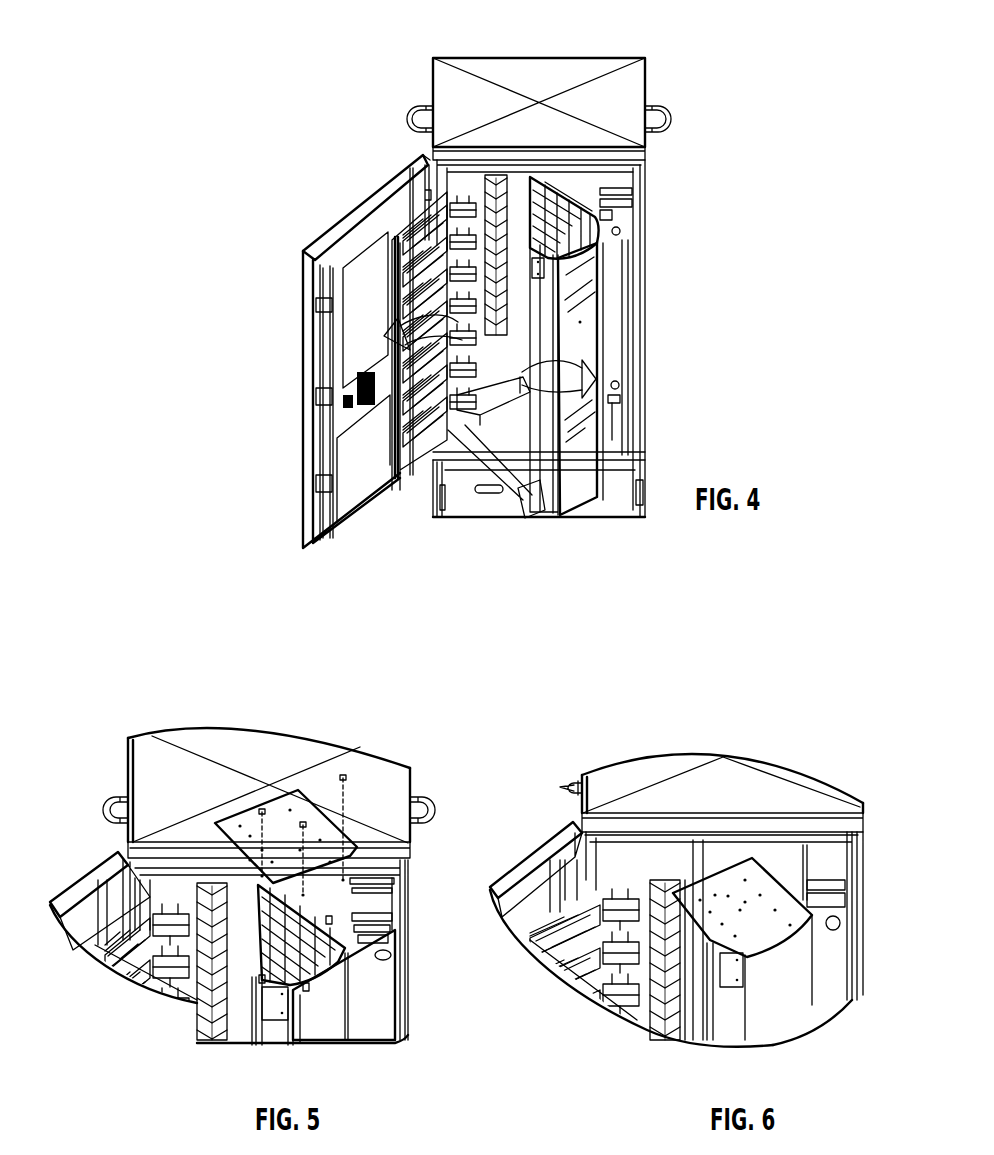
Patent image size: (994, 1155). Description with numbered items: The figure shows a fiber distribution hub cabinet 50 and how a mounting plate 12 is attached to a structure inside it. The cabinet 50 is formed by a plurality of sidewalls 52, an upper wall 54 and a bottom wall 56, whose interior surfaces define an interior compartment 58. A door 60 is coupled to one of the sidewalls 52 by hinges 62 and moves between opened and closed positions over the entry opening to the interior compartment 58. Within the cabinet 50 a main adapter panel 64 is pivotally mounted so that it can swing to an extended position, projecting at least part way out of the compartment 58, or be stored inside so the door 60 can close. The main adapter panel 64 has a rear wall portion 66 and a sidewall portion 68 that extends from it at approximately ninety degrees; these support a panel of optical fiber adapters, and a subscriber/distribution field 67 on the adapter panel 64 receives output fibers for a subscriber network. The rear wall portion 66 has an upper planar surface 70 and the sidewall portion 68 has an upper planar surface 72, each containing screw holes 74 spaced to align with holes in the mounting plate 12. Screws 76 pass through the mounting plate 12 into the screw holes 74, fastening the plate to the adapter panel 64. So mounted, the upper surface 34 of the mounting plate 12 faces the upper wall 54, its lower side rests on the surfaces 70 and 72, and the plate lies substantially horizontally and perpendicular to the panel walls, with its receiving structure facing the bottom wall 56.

In FIG. 5, the mounting plate 12 is at (340, 838).
In FIG. 6, the mounting plate 12 is at (765, 885).
In FIG. 6, the upper surface 34 is at (736, 878).
In FIG. 4, the fiber distribution hub cabinet 50 is at (600, 80).
In FIG. 5, the fiber distribution hub cabinet 50 is at (287, 778).
In FIG. 6, the fiber distribution hub cabinet 50 is at (717, 755).
In FIG. 4, the sidewalls 52 is at (645, 277).
In FIG. 4, the upper wall 54 is at (637, 81).
In FIG. 5, the upper wall 54 is at (205, 740).
In FIG. 6, the upper wall 54 is at (788, 775).
In FIG. 4, the bottom wall 56 is at (618, 523).
In FIG. 4, the interior compartment 58 is at (443, 412).
In FIG. 4, the door 60 is at (365, 223).
In FIG. 5, the door 60 is at (82, 917).
In FIG. 6, the door 60 is at (528, 885).
In FIG. 4, the hinges 62 is at (427, 193).
In FIG. 4, the main adapter panel 64 is at (592, 338).
In FIG. 5, the main adapter panel 64 is at (304, 1030).
In FIG. 6, the main adapter panel 64 is at (790, 987).
In FIG. 4, the rear wall portion 66 is at (600, 212).
In FIG. 5, the rear wall portion 66 is at (340, 890).
In FIG. 4, the subscriber/distribution field 67 is at (548, 185).
In FIG. 4, the sidewall portion 68 is at (580, 308).
In FIG. 5, the sidewall portion 68 is at (337, 992).
In FIG. 5, the upper planar surface 70 is at (322, 905).
In FIG. 5, the upper planar surface 72 is at (360, 940).
In FIG. 5, the screw holes 74 is at (330, 920).
In FIG. 5, the screws 76 is at (343, 774).